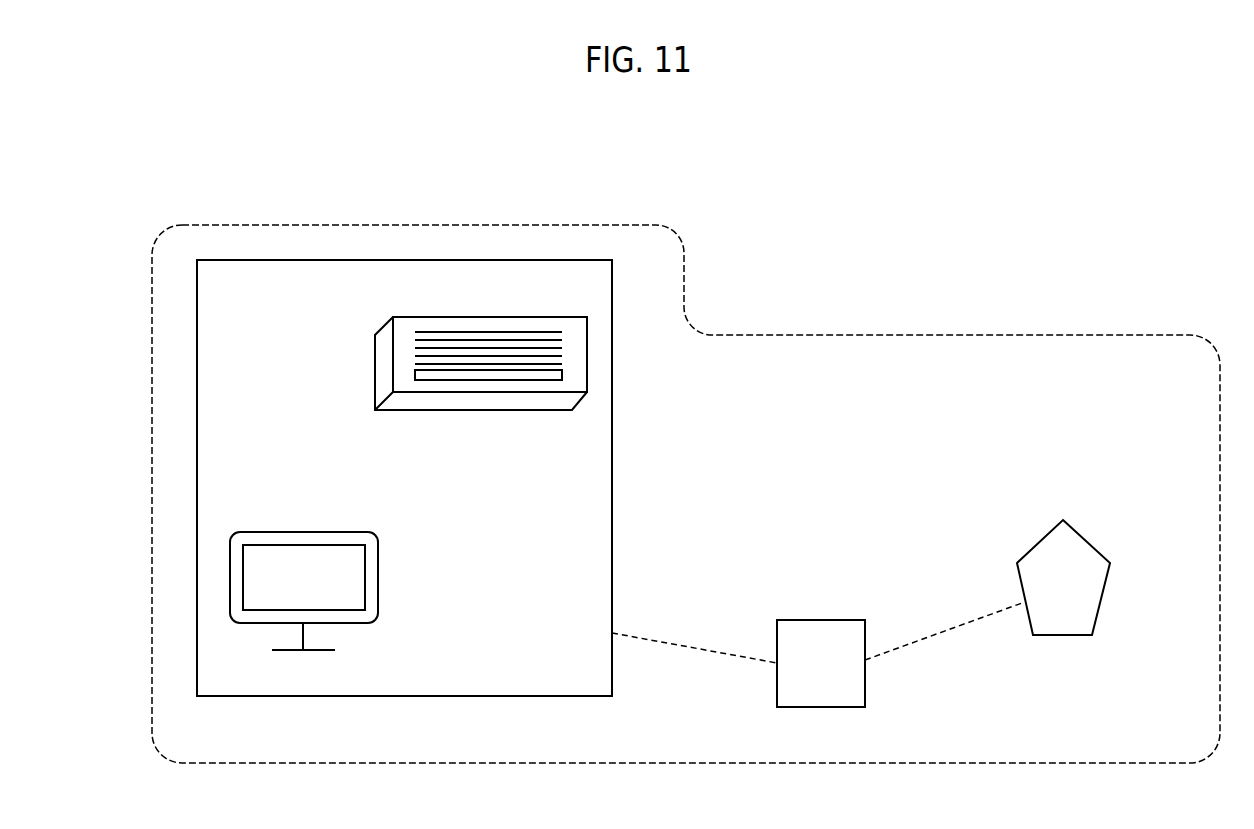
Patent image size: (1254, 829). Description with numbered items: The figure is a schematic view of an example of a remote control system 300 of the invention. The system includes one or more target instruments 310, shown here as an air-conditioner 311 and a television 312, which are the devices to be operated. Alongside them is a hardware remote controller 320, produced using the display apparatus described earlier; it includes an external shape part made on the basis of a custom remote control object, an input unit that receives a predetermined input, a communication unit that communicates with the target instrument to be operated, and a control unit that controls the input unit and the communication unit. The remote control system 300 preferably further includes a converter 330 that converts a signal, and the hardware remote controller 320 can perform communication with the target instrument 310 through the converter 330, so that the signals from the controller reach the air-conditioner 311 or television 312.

The remote control system 300 is at (757, 276).
The target instruments 310 is at (490, 260).
The air-conditioner 311 is at (488, 412).
The television 312 is at (380, 578).
The hardware remote controller 320 is at (1088, 541).
The converter 330 is at (822, 620).